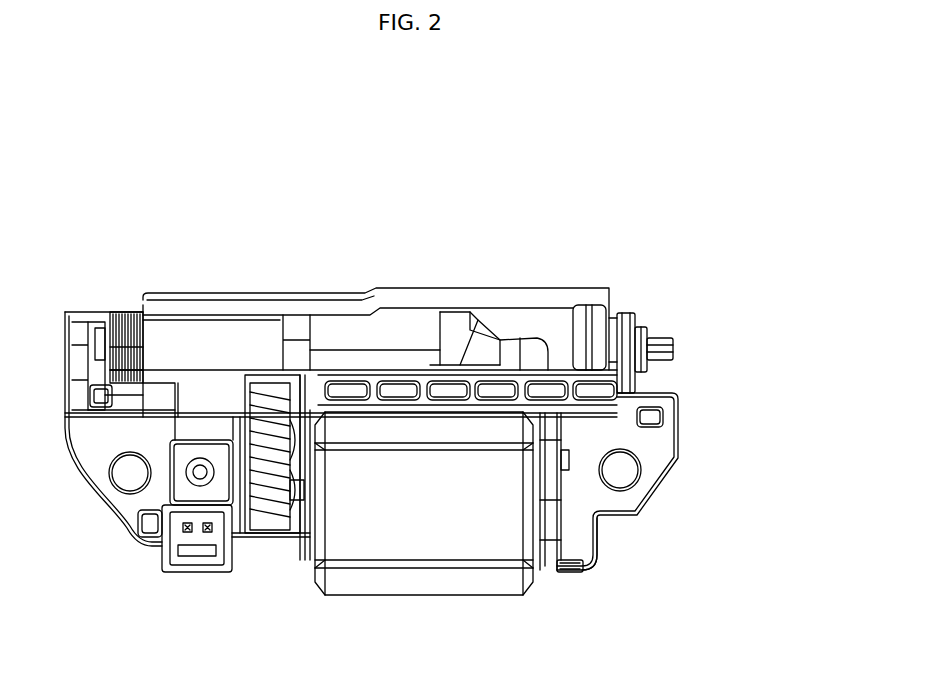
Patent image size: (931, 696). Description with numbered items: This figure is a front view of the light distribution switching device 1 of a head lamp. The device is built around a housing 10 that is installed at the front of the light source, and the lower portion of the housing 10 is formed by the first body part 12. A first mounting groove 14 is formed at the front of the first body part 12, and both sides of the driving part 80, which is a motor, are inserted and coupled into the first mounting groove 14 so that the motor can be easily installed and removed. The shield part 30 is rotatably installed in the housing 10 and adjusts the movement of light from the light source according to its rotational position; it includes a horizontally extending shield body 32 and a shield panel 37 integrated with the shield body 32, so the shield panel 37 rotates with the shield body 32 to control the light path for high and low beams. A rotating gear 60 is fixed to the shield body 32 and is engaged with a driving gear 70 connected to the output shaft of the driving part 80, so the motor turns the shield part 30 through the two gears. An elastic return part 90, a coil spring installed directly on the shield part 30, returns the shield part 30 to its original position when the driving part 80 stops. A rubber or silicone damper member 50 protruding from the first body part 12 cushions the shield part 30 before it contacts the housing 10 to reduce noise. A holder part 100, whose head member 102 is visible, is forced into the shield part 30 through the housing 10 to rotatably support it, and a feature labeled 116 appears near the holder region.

The light distribution switching device 1 is at (566, 138).
The housing 10 is at (614, 588).
The first body part 12 is at (608, 542).
The first mounting groove 14 is at (565, 570).
The shield part 30 is at (461, 276).
The shield body 32 is at (392, 355).
The shield panel 37 is at (262, 300).
The damper member 50 is at (196, 478).
The rotating gear 60 is at (183, 428).
The driving gear 70 is at (268, 525).
The driving part 80 is at (410, 582).
The elastic return part 90 is at (121, 300).
The holder part 100 is at (685, 344).
The head member 102 is at (656, 322).
The flange 116 is at (628, 298).